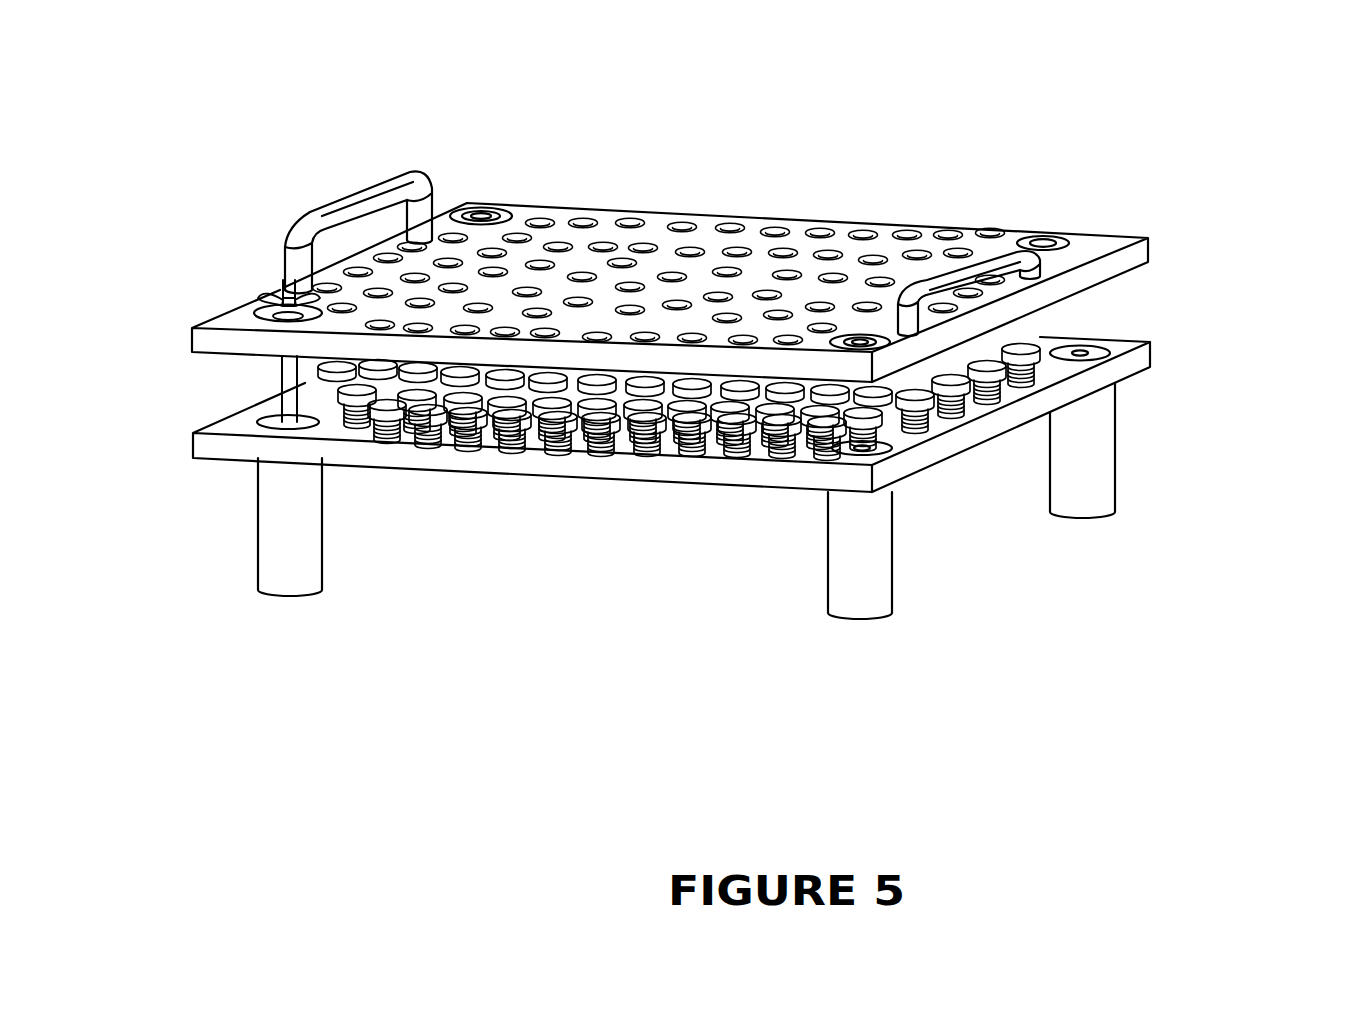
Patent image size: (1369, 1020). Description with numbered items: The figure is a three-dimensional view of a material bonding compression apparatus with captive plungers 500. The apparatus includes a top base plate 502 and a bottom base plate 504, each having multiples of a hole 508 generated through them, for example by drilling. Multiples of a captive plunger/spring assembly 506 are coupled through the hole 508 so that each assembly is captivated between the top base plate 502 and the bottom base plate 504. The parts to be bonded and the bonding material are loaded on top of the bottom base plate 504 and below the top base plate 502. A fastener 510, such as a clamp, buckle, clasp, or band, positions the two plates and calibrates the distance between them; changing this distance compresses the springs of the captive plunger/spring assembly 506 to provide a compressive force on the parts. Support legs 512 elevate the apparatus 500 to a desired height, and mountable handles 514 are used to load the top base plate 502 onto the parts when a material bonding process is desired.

The material bonding compression apparatus with captive plungers 500 is at (611, 652).
The top base plate 502 is at (1133, 253).
The bottom base plate 504 is at (1137, 360).
The captive plunger/spring assembly 506 is at (494, 415).
The hole 508 is at (730, 248).
The fastener 510 is at (263, 300).
The support legs 512 is at (1103, 447).
The mountable handles 514 is at (1033, 240).